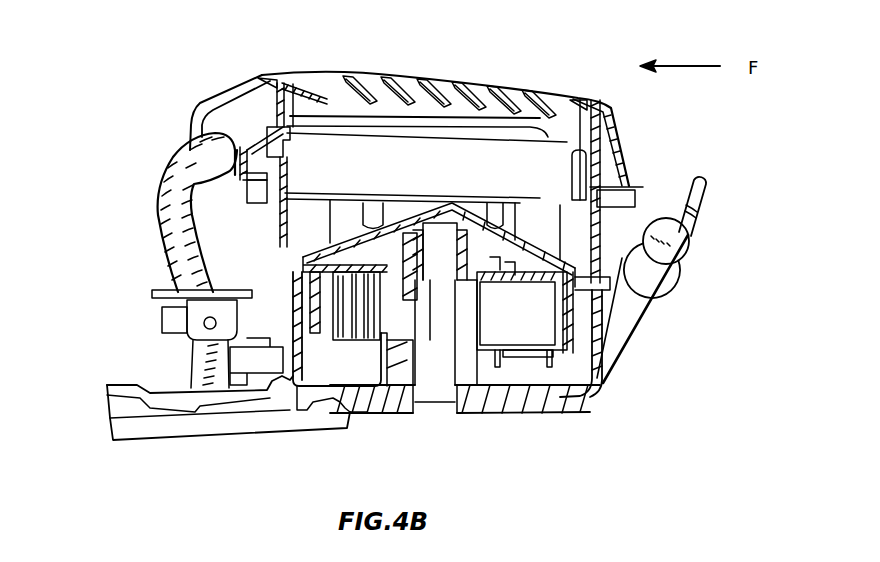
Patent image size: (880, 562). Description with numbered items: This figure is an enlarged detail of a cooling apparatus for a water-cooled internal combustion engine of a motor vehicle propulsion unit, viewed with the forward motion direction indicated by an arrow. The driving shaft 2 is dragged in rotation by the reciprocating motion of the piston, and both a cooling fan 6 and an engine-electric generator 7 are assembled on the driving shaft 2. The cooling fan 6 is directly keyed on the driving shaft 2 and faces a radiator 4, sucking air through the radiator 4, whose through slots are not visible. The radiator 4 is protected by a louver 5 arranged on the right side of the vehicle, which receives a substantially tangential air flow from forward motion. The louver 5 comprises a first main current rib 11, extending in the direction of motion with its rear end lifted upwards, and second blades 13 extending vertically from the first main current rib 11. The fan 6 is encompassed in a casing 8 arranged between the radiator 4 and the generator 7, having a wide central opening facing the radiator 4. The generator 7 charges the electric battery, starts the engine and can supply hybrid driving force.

The driving shaft 2 is at (447, 268).
The radiator 4 is at (333, 163).
The louver 5 is at (508, 67).
The cooling fan 6 is at (540, 215).
The engine-electric generator 7 is at (335, 298).
The casing 8 is at (605, 240).
The first main current rib 11 is at (407, 78).
The second blades 13 is at (367, 82).